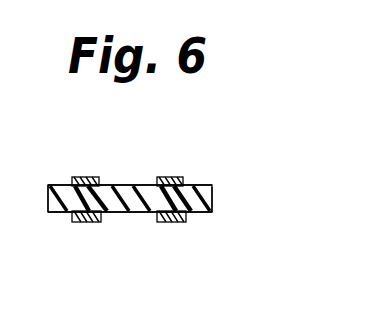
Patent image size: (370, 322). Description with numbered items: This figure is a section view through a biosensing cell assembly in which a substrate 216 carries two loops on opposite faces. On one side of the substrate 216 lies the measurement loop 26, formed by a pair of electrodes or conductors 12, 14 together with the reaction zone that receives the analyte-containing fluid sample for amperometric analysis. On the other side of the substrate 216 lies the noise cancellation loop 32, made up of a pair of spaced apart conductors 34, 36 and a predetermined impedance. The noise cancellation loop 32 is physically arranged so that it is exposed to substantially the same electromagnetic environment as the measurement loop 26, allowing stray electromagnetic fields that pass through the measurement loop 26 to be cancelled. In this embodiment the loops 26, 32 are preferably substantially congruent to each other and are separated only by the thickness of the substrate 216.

The conductor 12 is at (88, 177).
The conductor 14 is at (177, 177).
The measurement loop 26 is at (134, 184).
The noise cancellation loop 32 is at (124, 222).
The conductor 34 is at (90, 223).
The conductor 36 is at (181, 223).
The substrate 216 is at (214, 202).